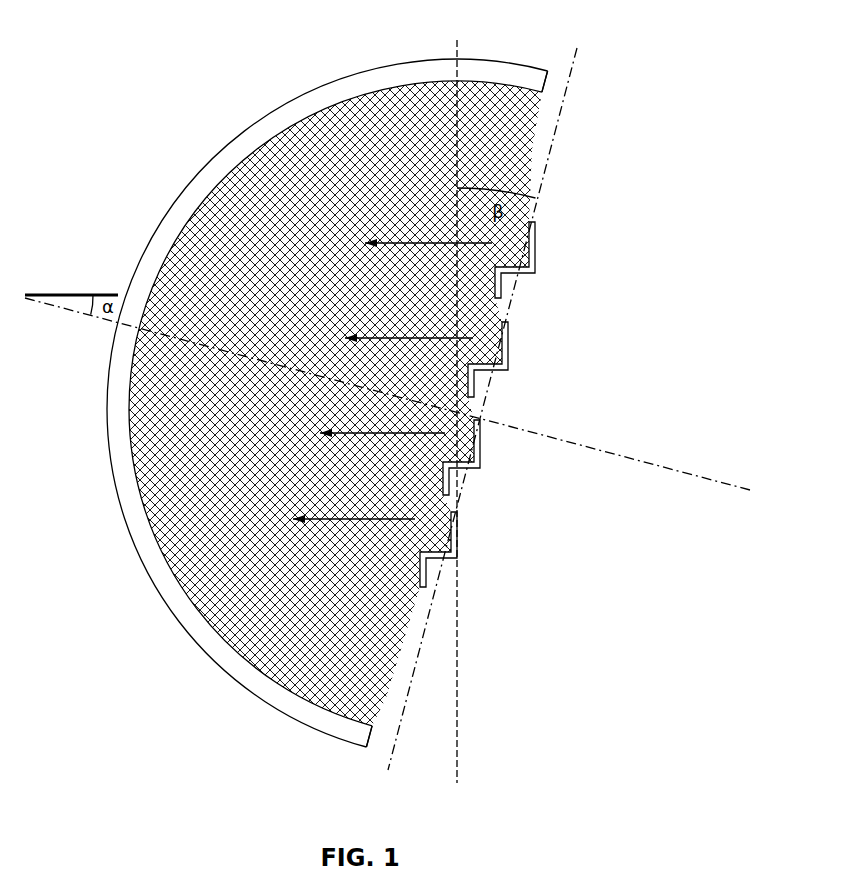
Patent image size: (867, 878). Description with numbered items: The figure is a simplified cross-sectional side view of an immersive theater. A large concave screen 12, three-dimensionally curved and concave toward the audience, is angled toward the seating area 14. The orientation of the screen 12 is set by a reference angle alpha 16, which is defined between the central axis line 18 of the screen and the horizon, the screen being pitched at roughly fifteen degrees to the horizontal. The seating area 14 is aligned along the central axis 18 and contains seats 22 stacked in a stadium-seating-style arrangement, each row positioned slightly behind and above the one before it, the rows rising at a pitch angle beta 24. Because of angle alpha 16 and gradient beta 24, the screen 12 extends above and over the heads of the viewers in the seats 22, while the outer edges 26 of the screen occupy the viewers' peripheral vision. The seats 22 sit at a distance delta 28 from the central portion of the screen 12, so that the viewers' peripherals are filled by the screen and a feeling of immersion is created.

The concave screen 12 is at (229, 119).
The seating area 14 is at (577, 306).
The reference angle alpha 16 is at (91, 291).
The central axis line 18 is at (696, 482).
The seats 22 is at (483, 477).
The pitch angle beta 24 is at (477, 185).
The outer edges of the screen 26 is at (377, 746).
The distance delta 28 is at (162, 337).